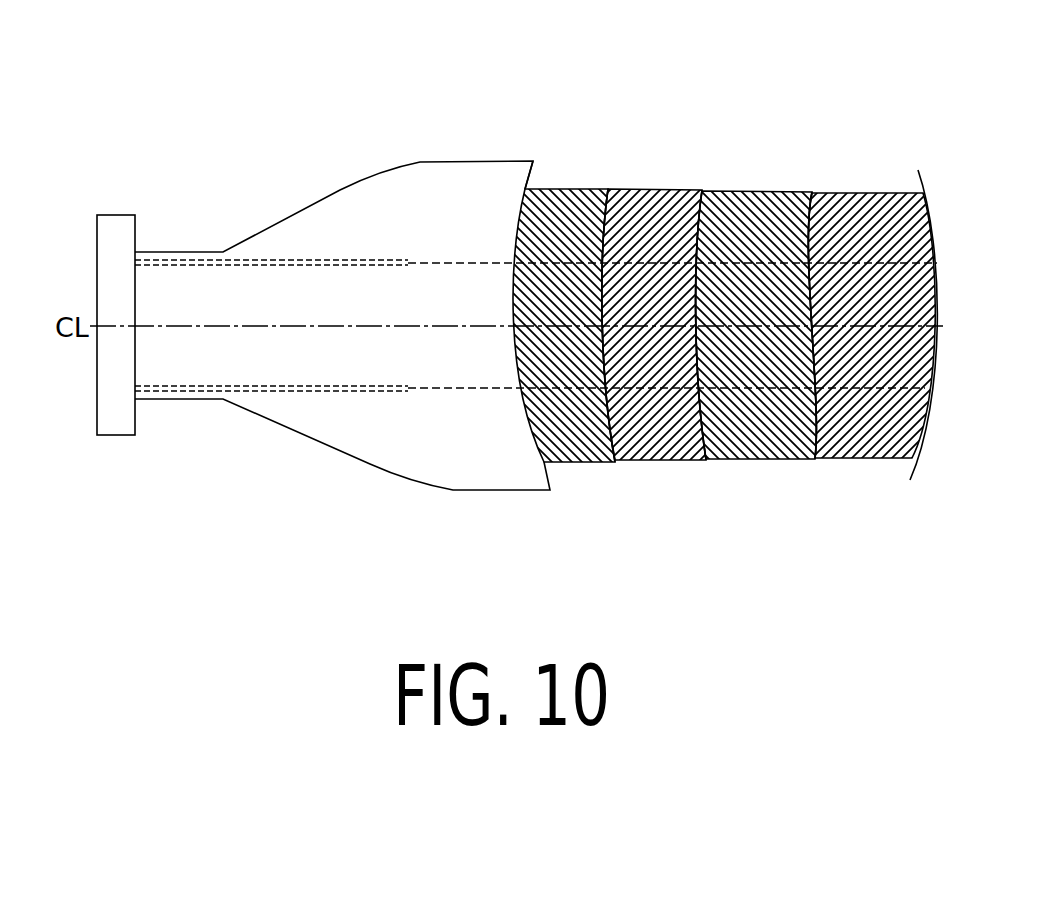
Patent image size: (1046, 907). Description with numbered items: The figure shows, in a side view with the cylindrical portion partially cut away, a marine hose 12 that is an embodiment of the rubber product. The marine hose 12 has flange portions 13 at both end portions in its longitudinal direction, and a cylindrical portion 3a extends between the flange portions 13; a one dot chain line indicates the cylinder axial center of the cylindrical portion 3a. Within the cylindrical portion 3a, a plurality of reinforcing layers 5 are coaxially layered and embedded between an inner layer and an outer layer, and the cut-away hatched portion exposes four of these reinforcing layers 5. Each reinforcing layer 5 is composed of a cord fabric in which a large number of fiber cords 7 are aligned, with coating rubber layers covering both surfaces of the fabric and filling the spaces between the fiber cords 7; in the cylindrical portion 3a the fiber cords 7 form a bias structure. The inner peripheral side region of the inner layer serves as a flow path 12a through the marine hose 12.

The marine hose 12 is at (418, 160).
The flow path 12a is at (485, 263).
The flange portion 13 is at (118, 217).
The cylindrical portion 3a is at (498, 197).
The reinforcing layer 5 is at (562, 190).
The fiber cord 7 is at (557, 450).